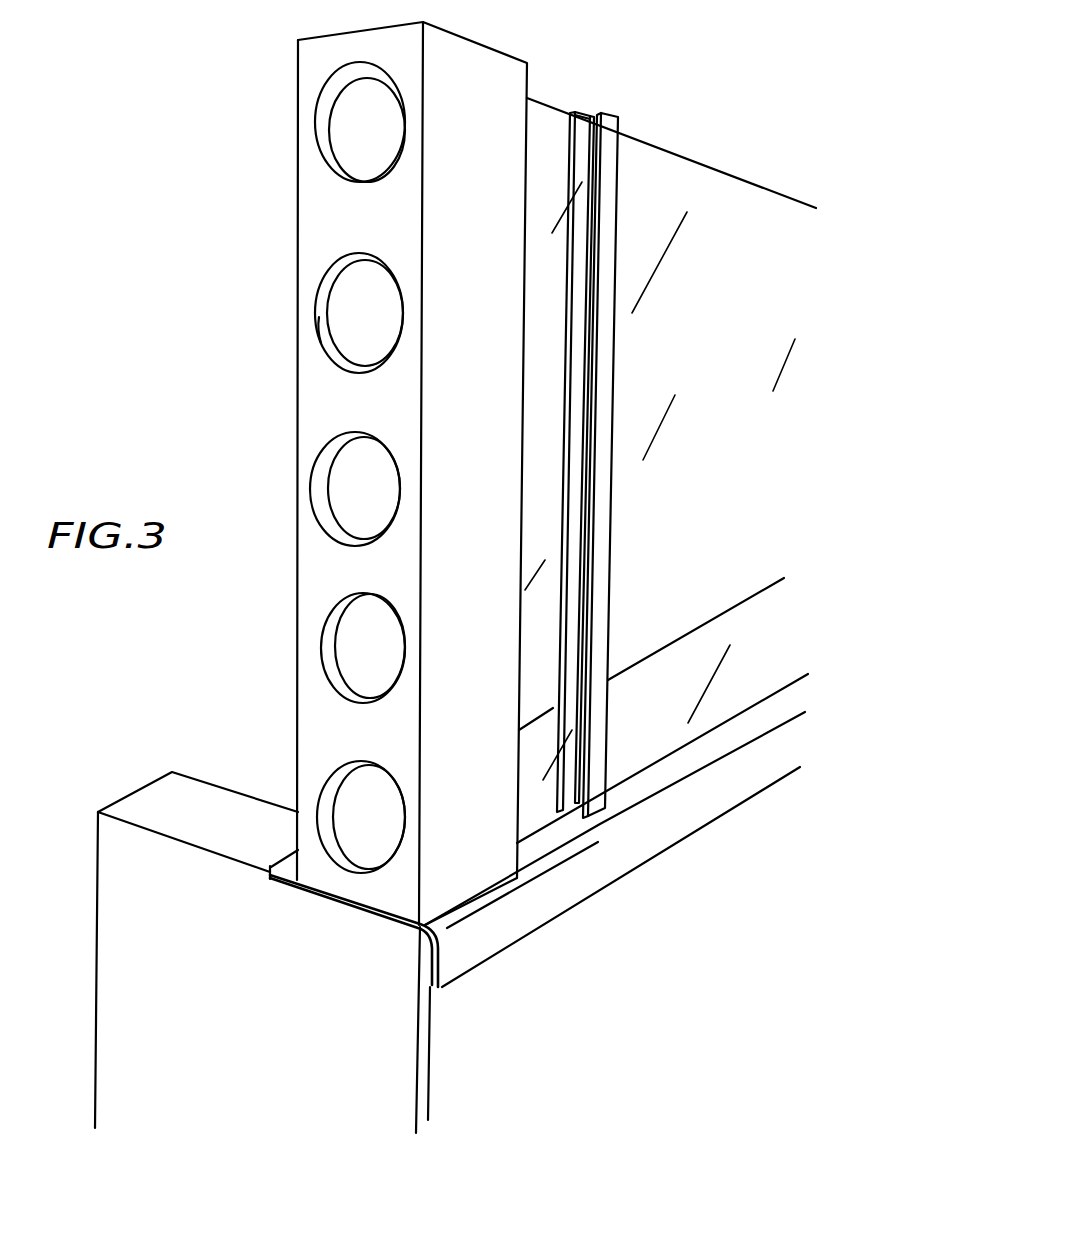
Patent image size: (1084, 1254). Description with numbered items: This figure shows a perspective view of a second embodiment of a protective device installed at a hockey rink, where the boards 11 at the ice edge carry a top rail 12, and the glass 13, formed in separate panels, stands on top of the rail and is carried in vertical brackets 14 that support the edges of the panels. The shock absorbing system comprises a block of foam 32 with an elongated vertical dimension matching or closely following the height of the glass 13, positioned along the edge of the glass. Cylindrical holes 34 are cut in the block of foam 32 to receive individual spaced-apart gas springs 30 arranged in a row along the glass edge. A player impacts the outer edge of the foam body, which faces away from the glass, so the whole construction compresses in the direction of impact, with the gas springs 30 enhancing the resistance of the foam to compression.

The boards 11 is at (638, 975).
The top rail 12 is at (655, 782).
The glass 13 is at (538, 128).
The vertical brackets 14 is at (608, 157).
The gas springs 30 is at (358, 123).
The block of foam 32 is at (322, 215).
The cylindrical holes 34 is at (320, 343).